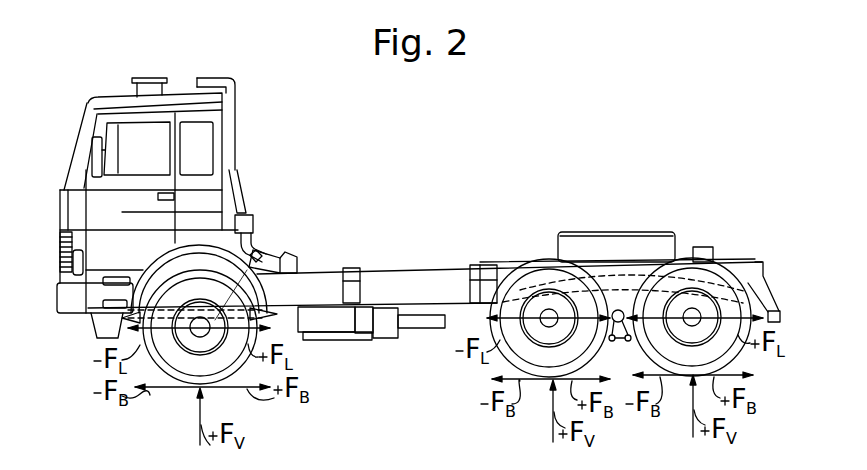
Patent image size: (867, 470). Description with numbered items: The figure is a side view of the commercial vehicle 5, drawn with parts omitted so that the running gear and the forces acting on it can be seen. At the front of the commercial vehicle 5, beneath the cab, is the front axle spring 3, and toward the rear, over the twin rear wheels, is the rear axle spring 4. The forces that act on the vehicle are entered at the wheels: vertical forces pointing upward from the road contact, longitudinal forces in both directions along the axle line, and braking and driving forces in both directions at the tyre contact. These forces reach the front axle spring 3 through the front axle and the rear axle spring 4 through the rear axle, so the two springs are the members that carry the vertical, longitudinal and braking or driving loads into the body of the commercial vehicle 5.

The front axle spring 3 is at (258, 257).
The rear axle spring 4 is at (629, 275).
The commercial vehicle 5 is at (290, 153).